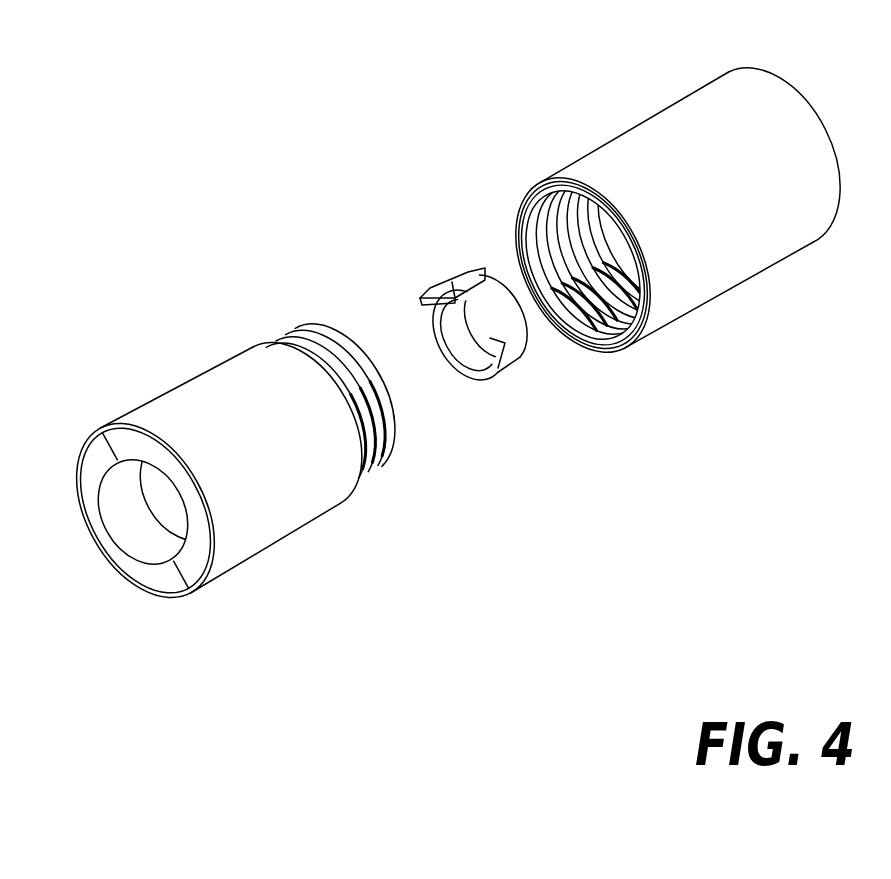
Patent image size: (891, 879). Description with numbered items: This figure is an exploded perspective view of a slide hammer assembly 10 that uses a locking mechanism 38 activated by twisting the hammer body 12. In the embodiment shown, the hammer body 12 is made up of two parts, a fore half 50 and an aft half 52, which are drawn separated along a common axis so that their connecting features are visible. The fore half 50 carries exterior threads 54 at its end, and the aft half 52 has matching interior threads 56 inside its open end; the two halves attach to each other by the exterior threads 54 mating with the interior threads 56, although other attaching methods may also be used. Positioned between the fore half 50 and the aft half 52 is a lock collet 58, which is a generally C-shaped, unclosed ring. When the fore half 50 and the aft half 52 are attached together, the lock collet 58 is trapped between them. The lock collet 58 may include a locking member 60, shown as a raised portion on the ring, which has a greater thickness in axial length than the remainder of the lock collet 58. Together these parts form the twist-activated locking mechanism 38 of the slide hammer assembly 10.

The slide hammer assembly 10 is at (262, 223).
The hammer body 12 is at (347, 190).
The locking mechanism 38 is at (224, 264).
The fore half 50 is at (202, 395).
The aft half 52 is at (652, 137).
The exterior threads 54 is at (387, 443).
The interior threads 56 is at (543, 210).
The lock collet 58 is at (434, 344).
The locking member 60 is at (440, 281).